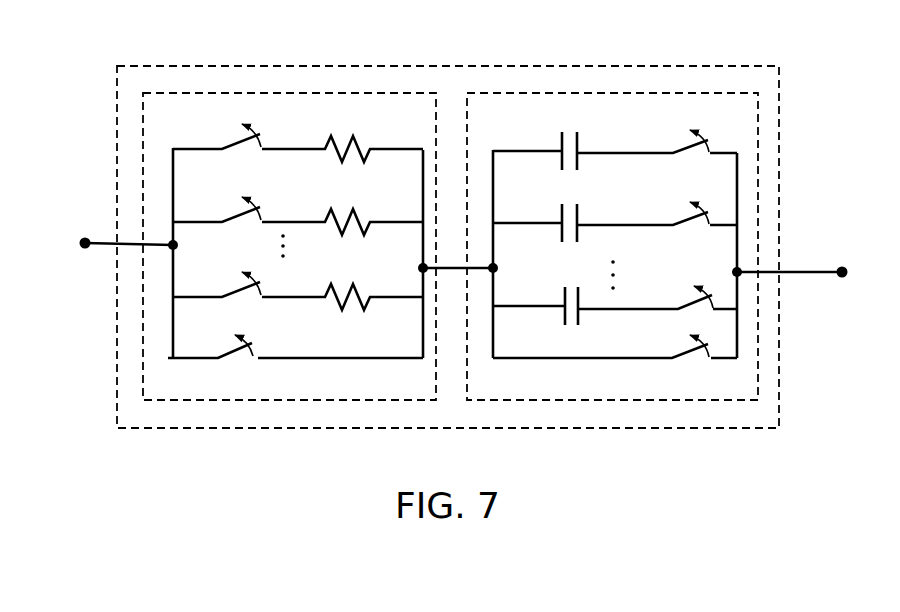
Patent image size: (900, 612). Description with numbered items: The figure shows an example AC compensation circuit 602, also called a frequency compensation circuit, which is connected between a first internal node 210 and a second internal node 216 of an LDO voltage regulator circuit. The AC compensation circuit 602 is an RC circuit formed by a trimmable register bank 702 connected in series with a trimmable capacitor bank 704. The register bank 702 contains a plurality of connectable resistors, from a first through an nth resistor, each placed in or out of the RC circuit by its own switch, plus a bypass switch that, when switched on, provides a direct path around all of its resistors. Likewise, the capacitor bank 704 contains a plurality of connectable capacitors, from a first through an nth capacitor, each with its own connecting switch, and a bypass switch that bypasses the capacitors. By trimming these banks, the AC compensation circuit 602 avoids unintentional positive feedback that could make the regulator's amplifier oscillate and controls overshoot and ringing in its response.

The first internal node 210 is at (73, 241).
The second internal node 216 is at (849, 266).
The AC compensation circuit 602 is at (529, 64).
The register bank 702 is at (294, 93).
The capacitor bank 704 is at (651, 91).